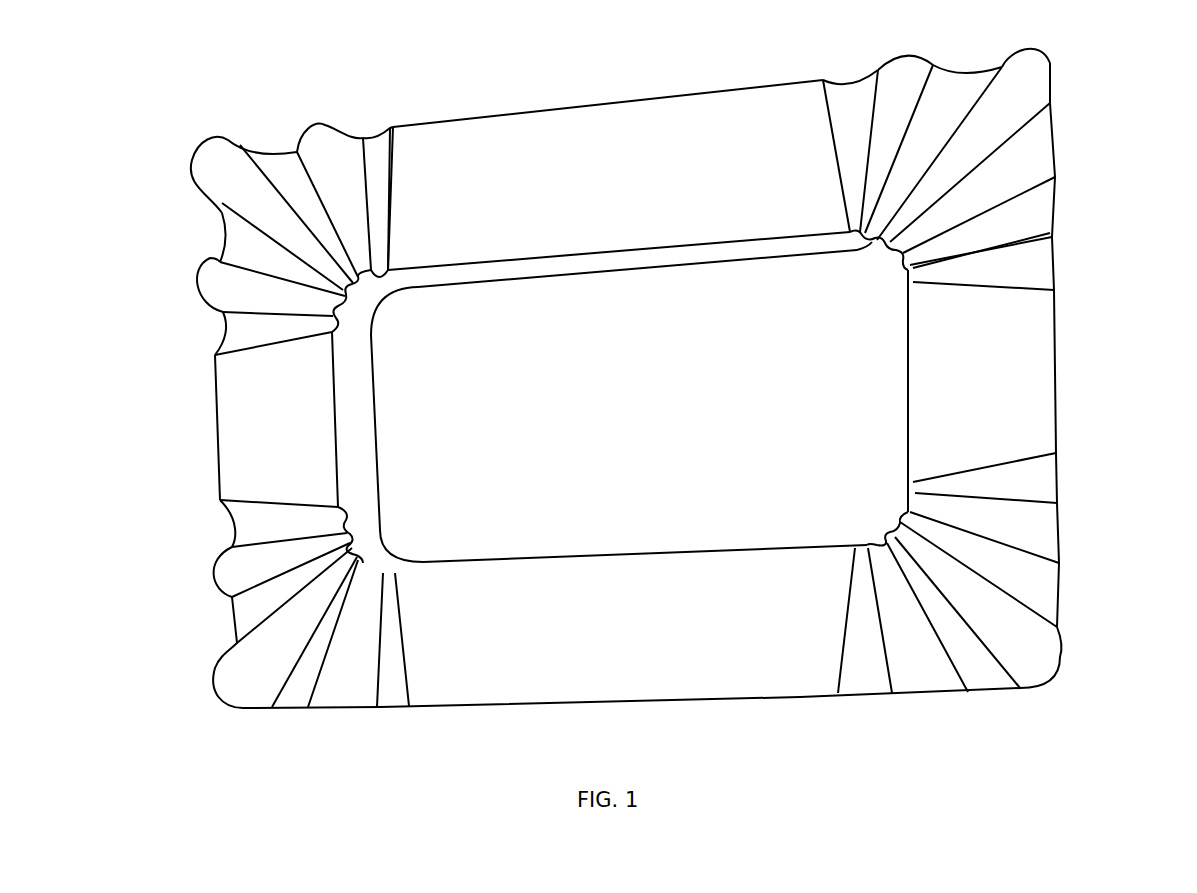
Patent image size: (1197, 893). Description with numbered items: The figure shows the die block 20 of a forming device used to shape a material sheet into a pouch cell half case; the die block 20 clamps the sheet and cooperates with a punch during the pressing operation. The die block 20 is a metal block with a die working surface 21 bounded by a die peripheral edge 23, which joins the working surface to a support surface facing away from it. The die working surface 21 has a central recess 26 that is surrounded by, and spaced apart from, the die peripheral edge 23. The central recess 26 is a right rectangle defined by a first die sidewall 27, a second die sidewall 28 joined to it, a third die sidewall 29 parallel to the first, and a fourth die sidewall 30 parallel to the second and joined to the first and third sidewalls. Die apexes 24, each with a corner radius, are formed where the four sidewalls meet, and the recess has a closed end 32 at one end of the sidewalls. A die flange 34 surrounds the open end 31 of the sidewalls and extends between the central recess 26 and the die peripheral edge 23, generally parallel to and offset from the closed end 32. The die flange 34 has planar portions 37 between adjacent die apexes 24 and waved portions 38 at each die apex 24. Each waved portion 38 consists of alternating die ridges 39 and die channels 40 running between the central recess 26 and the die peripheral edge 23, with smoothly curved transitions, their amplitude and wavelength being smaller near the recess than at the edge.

The die block 20 is at (302, 68).
The die working surface 21 is at (257, 419).
The die peripheral edge 23 is at (1058, 318).
The die apex 24 is at (355, 297).
The central recess 26 is at (662, 420).
The first die sidewall 27 is at (738, 252).
The second die sidewall 28 is at (910, 407).
The third die sidewall 29 is at (755, 548).
The fourth die sidewall 30 is at (341, 426).
The open end 31 is at (643, 252).
The closed end 32 is at (662, 420).
The die flange 34 is at (619, 173).
The planar portion 37 is at (547, 118).
The waved portion 38 is at (955, 78).
The die ridge 39 is at (205, 152).
The die channel 40 is at (372, 147).